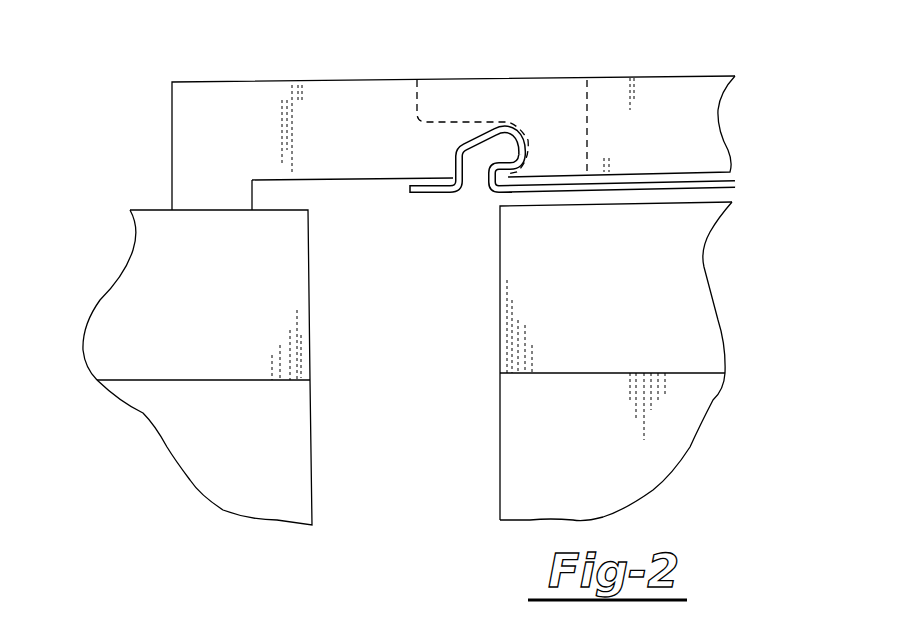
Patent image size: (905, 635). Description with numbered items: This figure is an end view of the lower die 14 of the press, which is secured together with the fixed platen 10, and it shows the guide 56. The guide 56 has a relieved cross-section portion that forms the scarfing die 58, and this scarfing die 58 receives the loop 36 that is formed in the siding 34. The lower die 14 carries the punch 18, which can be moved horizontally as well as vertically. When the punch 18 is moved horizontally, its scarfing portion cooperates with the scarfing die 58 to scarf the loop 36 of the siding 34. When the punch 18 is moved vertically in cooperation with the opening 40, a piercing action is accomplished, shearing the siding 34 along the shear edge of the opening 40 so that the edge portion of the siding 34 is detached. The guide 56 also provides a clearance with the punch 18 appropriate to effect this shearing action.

The fixed platen 10 is at (212, 475).
The lower die 14 is at (128, 328).
The punch 18 is at (508, 112).
The siding 34 is at (733, 183).
The loop 36 is at (483, 148).
The opening 40 is at (408, 440).
The guide 56 is at (197, 110).
The scarfing die 58 is at (450, 148).